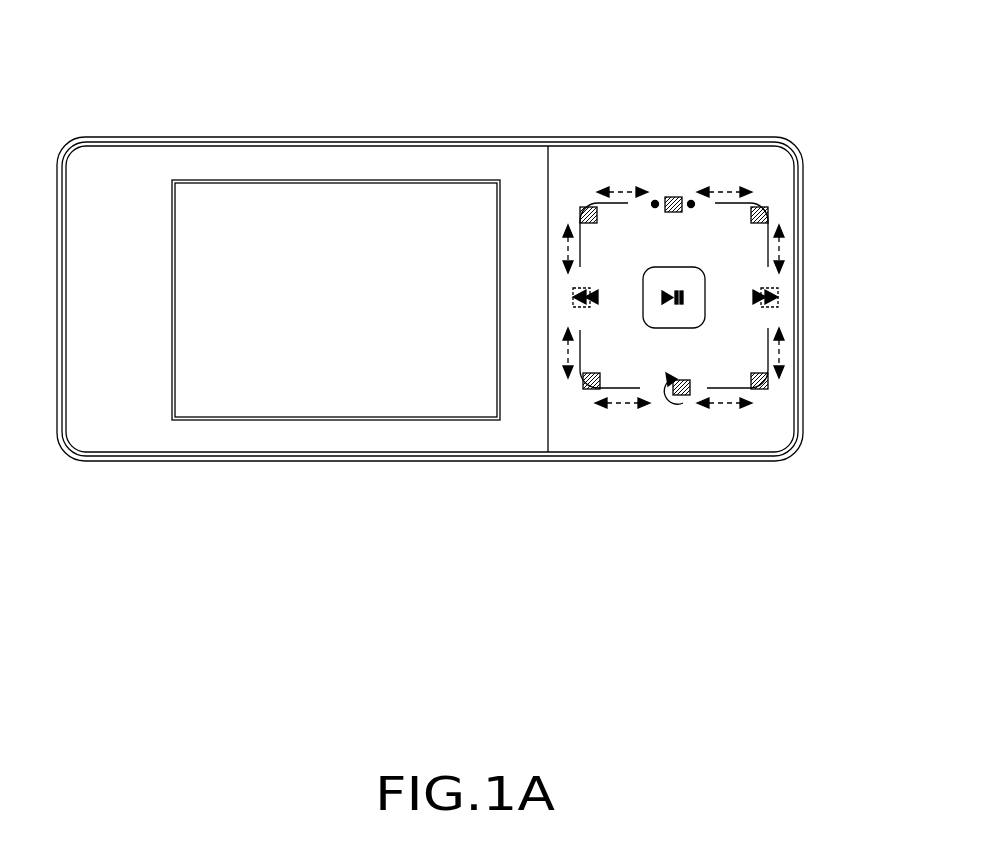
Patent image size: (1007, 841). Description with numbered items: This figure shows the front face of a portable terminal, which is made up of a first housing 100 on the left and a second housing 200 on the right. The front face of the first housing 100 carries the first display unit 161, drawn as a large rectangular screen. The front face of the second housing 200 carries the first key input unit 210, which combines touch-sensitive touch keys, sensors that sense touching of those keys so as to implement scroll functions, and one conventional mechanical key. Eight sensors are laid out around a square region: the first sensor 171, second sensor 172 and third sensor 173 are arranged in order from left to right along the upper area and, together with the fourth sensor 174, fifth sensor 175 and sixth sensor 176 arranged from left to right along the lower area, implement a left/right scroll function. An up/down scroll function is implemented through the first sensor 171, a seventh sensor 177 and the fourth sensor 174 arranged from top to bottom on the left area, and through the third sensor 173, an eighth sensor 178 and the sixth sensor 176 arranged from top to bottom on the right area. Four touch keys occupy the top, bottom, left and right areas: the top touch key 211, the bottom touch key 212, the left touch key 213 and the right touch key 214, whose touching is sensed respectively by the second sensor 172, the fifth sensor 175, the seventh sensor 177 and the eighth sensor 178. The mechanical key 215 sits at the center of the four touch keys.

The first housing 100 is at (271, 114).
The first display unit 161 is at (322, 388).
The second housing 200 is at (816, 226).
The first key input unit 210 is at (752, 422).
The first sensor 171 is at (585, 207).
The second sensor 172 is at (670, 197).
The third sensor 173 is at (765, 208).
The fourth sensor 174 is at (589, 390).
The fifth sensor 175 is at (706, 540).
The sixth sensor 176 is at (768, 384).
The seventh sensor 177 is at (576, 303).
The eighth sensor 178 is at (779, 298).
The top touch key 211 is at (691, 200).
The bottom touch key 212 is at (665, 410).
The left touch key 213 is at (575, 298).
The right touch key 214 is at (777, 290).
The mechanical key 215 is at (697, 315).